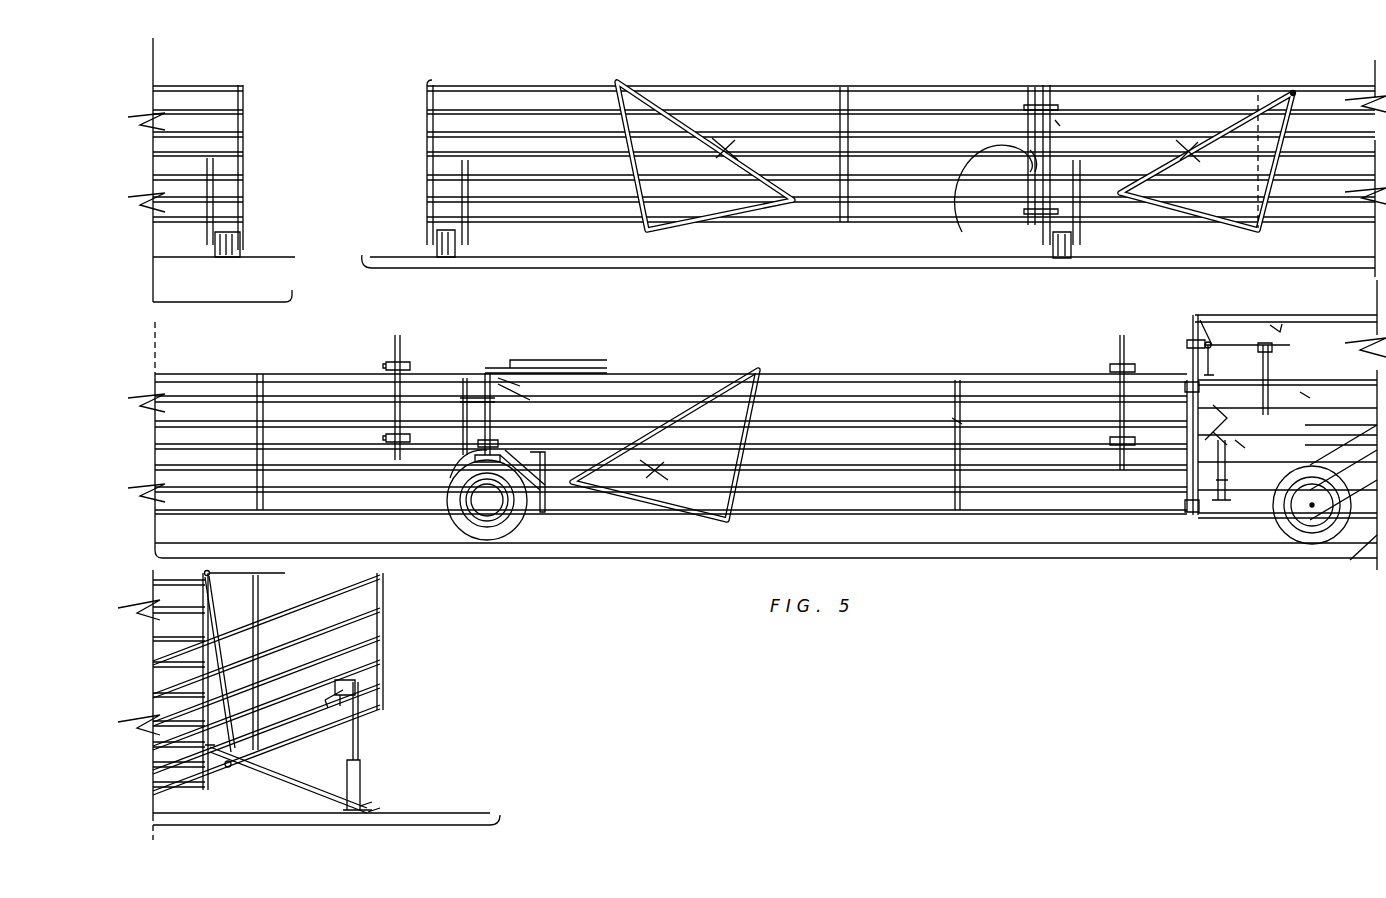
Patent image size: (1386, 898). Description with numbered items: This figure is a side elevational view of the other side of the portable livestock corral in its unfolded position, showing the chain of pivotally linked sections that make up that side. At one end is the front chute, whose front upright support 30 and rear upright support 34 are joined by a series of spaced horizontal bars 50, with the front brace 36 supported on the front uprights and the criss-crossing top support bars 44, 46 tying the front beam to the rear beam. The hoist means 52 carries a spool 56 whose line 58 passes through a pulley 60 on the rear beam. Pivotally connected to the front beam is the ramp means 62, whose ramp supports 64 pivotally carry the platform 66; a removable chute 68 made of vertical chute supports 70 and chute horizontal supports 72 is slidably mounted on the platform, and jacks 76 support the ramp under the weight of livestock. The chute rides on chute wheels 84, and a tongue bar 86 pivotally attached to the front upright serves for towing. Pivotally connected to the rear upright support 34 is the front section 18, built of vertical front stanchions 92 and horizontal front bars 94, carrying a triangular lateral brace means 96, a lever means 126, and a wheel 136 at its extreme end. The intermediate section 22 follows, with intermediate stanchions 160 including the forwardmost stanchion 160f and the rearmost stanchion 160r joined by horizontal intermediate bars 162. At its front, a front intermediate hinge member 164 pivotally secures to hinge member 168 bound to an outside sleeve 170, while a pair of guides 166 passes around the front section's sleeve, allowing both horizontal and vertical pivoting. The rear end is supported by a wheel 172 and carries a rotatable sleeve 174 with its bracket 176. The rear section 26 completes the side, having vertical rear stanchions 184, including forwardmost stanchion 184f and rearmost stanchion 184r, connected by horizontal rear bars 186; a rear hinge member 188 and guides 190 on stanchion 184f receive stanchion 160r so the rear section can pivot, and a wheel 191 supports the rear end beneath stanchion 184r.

The front section 18 is at (1000, 522).
The intermediate section 22 is at (1295, 92).
The rear section 26 is at (888, 66).
The front upright support 30 is at (160, 628).
The rear upright support 34 is at (1192, 340).
The front brace 36 is at (255, 674).
The top support bar 44 is at (1290, 425).
The top support bar 46 is at (1342, 325).
The horizontally disposed bars 50 is at (1290, 384).
The hoist means 52 is at (1278, 328).
The spool 56 is at (1281, 379).
The line 58 is at (1262, 338).
The pulley 60 is at (1212, 346).
The ramp means 62 is at (385, 722).
The ramp supports 64 is at (215, 636).
The platform 66 is at (312, 730).
The chute 68 is at (350, 630).
The vertical chute supports 70 is at (286, 650).
The chute horizontal supports 72 is at (330, 600).
The jacks 76 is at (1230, 500).
The chute wheels 84 is at (1328, 540).
The tongue bars 86 is at (292, 788).
The vertical front stanchions 92 is at (490, 448).
The horizontal front bar 94 is at (832, 378).
The lateral brace means 96 is at (740, 108).
The lever means 126 is at (405, 368).
The wheel 136 is at (530, 492).
The vertical intermediate stanchions 160 is at (263, 432).
The forwardmost intermediate stanchion 160f is at (488, 376).
The rearmost intermediate stanchion 160r is at (1060, 126).
The horizontal intermediate bars 162 is at (258, 378).
The front intermediate hinge member 164 is at (468, 400).
The guides 166 is at (460, 455).
The hinge member 168 is at (487, 502).
The outside sleeve 170 is at (492, 436).
The wheel 172 is at (1068, 258).
The sleeve 174 is at (1078, 166).
The bracket 176 is at (1022, 208).
The vertical rear stanchions 184 is at (846, 136).
The forwardmost rear stanchion 184f is at (1032, 88).
The rearmost rear stanchion 184r is at (245, 120).
The horizontal rear bars 186 is at (208, 84).
The rear hinge member 188 is at (993, 197).
The guides 190 is at (1050, 92).
The wheel 191 is at (235, 254).